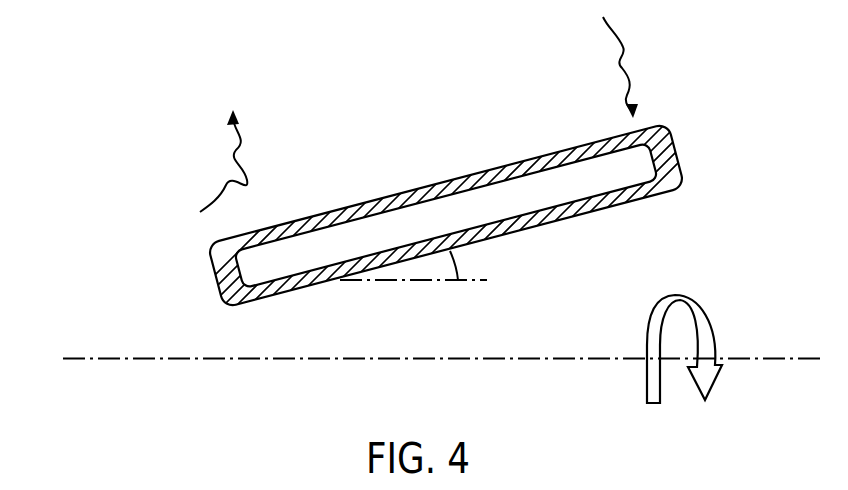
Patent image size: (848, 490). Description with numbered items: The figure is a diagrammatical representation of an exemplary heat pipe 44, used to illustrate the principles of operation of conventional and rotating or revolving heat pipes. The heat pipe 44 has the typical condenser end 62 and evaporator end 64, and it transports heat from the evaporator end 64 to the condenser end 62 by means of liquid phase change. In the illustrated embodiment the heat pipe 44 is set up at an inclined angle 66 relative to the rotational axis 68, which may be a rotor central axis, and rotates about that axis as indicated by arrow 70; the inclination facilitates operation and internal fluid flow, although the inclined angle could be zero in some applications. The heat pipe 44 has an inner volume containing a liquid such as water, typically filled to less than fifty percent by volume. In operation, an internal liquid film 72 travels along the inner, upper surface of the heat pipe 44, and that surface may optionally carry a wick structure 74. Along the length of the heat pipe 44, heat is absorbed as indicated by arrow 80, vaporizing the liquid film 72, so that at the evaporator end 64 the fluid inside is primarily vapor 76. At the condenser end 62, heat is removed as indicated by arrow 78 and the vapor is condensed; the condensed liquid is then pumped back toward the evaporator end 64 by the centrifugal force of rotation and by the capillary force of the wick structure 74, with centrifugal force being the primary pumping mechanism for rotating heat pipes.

The heat pipe 44 is at (112, 144).
The condenser end 62 is at (253, 273).
The evaporator end 64 is at (633, 173).
The inclined angle 66 is at (460, 262).
The rotational axis 68 is at (83, 361).
The arrow 70 is at (695, 313).
The liquid film 72 is at (358, 217).
The wick structure 74 is at (443, 202).
The vapor 76 is at (578, 192).
The arrow 78 is at (208, 168).
The arrow 80 is at (625, 62).